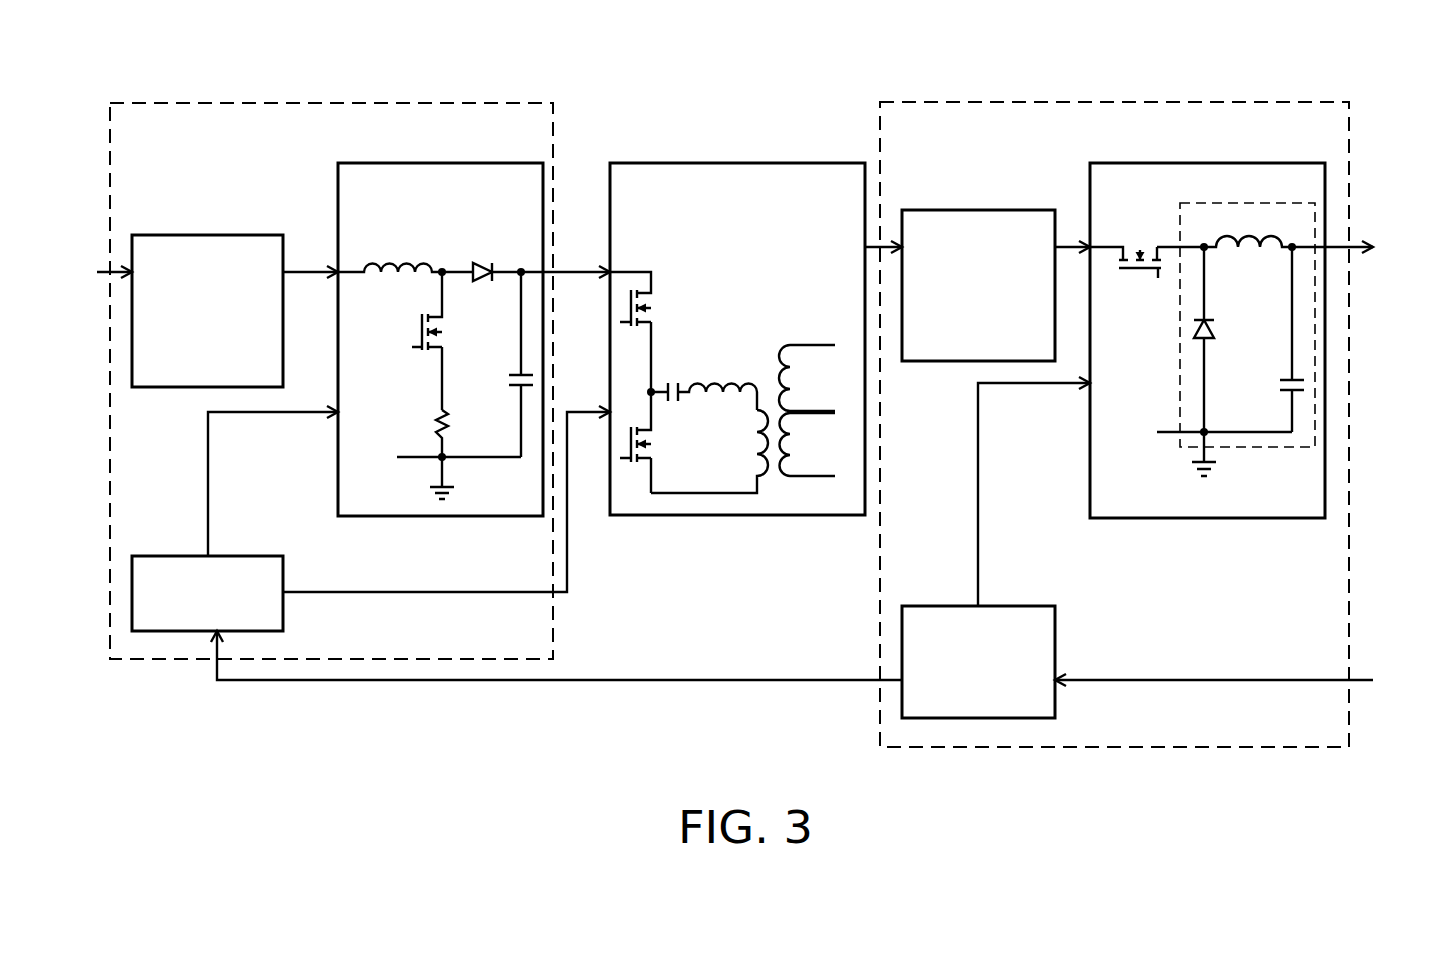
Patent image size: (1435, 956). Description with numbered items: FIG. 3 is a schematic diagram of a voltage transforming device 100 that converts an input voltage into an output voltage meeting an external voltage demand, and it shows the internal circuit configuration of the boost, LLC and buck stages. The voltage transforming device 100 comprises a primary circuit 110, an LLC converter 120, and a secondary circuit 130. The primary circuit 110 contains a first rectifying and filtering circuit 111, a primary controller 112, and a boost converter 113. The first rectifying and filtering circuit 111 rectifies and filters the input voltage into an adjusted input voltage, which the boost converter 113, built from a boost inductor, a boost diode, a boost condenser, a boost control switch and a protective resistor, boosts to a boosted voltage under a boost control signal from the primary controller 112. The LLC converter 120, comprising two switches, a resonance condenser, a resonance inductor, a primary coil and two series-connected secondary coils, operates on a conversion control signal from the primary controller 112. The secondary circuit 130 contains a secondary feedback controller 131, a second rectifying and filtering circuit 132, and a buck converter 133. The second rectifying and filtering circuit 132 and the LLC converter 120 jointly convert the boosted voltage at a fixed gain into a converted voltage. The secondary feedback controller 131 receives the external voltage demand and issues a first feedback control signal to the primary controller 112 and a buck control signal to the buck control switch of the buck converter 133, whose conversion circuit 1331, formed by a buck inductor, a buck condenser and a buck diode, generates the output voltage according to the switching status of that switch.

The voltage transforming device 100 is at (1378, 820).
The primary circuit 110 is at (490, 103).
The first rectifying and filtering circuit 111 is at (235, 235).
The primary controller 112 is at (235, 556).
The boost converter 113 is at (478, 163).
The LLC converter 120 is at (803, 163).
The secondary circuit 130 is at (1288, 102).
The secondary feedback controller 131 is at (1005, 606).
The second rectifying and filtering circuit 132 is at (1005, 210).
The buck converter 133 is at (1262, 163).
The conversion circuit 1331 is at (1243, 447).